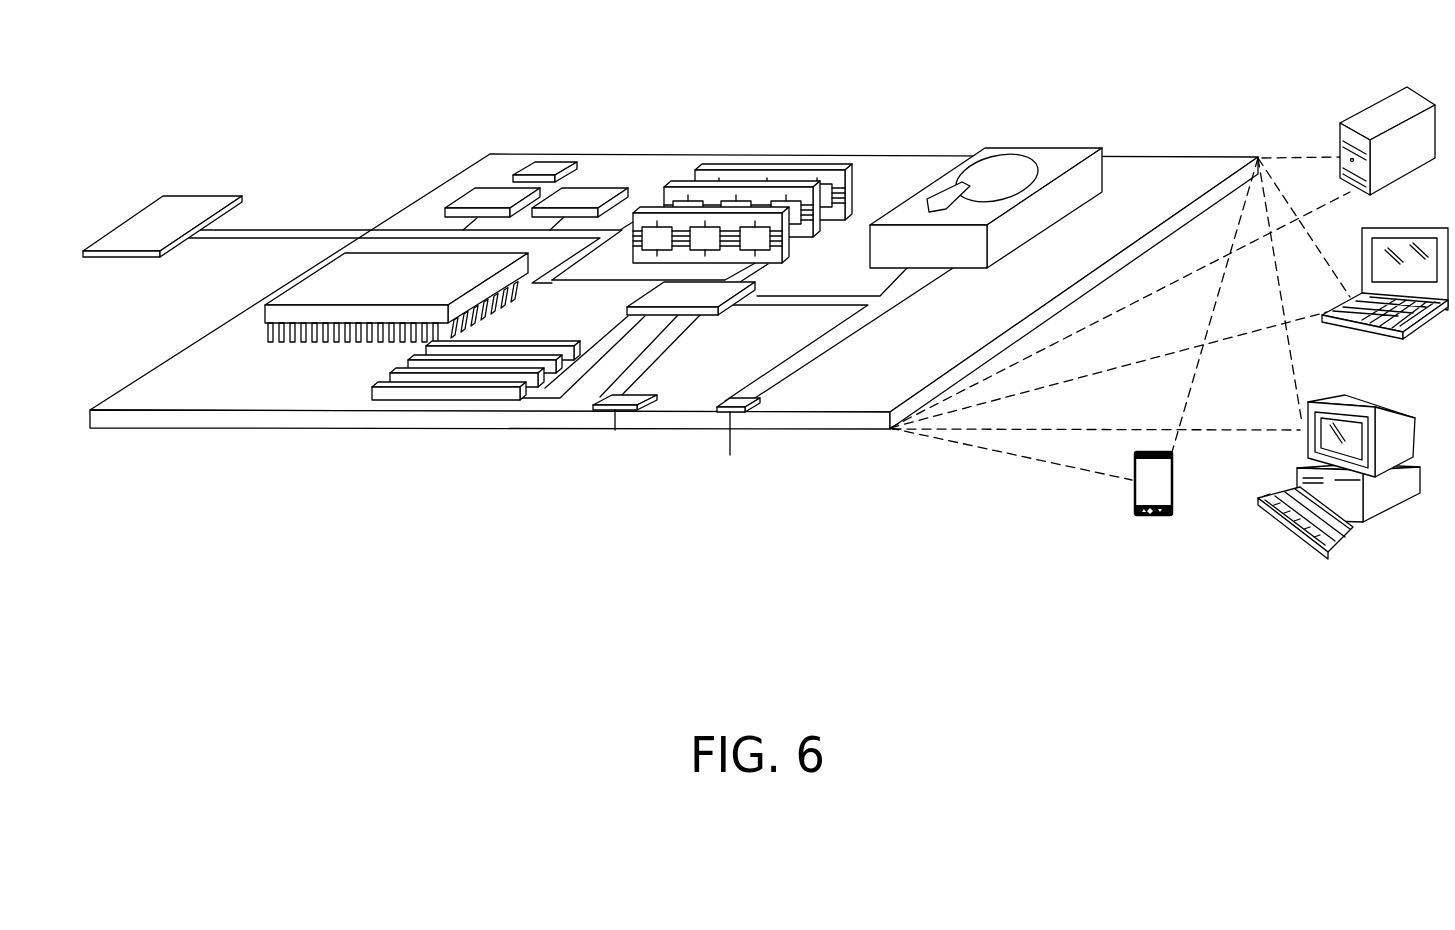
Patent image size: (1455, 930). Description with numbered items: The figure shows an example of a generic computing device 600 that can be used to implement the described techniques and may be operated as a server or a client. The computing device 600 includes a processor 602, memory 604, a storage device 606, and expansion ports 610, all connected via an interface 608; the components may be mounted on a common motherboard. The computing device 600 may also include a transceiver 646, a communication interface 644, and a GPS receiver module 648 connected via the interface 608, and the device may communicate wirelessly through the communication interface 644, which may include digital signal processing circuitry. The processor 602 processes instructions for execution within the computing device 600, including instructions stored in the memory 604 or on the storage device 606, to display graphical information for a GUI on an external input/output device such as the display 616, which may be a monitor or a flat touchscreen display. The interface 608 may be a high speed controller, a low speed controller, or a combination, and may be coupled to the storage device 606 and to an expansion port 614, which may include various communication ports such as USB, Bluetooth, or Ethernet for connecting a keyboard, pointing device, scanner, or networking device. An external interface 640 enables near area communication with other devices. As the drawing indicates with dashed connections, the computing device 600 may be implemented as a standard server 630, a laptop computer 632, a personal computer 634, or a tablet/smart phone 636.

The computing device 600 is at (408, 116).
The processor 602 is at (290, 285).
The memory 604 is at (778, 167).
The storage device 606 is at (1032, 148).
The interface 608 is at (660, 300).
The expansion ports 610 is at (400, 368).
The expansion port 614 is at (757, 405).
The display 616 is at (192, 210).
The standard server 630 is at (1365, 118).
The laptop computer 632 is at (1422, 227).
The personal computer 634 is at (1415, 420).
The tablet/smart phone 636 is at (1142, 518).
The external interface 640 is at (635, 397).
The communication interface 644 is at (492, 190).
The transceiver 646 is at (547, 168).
The GPS receiver module 648 is at (587, 190).